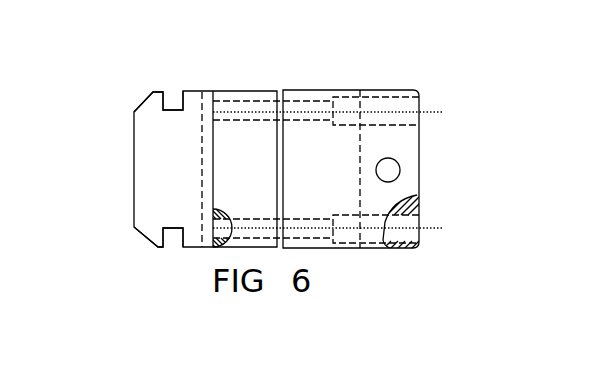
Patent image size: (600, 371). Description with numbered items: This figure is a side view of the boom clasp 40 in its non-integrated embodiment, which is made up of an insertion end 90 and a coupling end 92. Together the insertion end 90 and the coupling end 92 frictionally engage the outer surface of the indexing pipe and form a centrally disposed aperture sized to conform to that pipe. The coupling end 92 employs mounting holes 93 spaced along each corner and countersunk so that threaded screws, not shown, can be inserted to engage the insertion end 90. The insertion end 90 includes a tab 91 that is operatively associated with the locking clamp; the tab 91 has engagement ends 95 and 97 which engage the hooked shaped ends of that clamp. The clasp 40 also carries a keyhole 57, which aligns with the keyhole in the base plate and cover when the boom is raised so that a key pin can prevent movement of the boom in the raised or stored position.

The clasp 40 is at (133, 160).
The keyhole 57 is at (400, 172).
The insertion end 90 is at (227, 89).
The tab 91 is at (158, 180).
The coupling end 92 is at (322, 89).
The mounting holes 93 is at (420, 112).
The engagement end 95 is at (143, 235).
The engagement end 97 is at (148, 98).